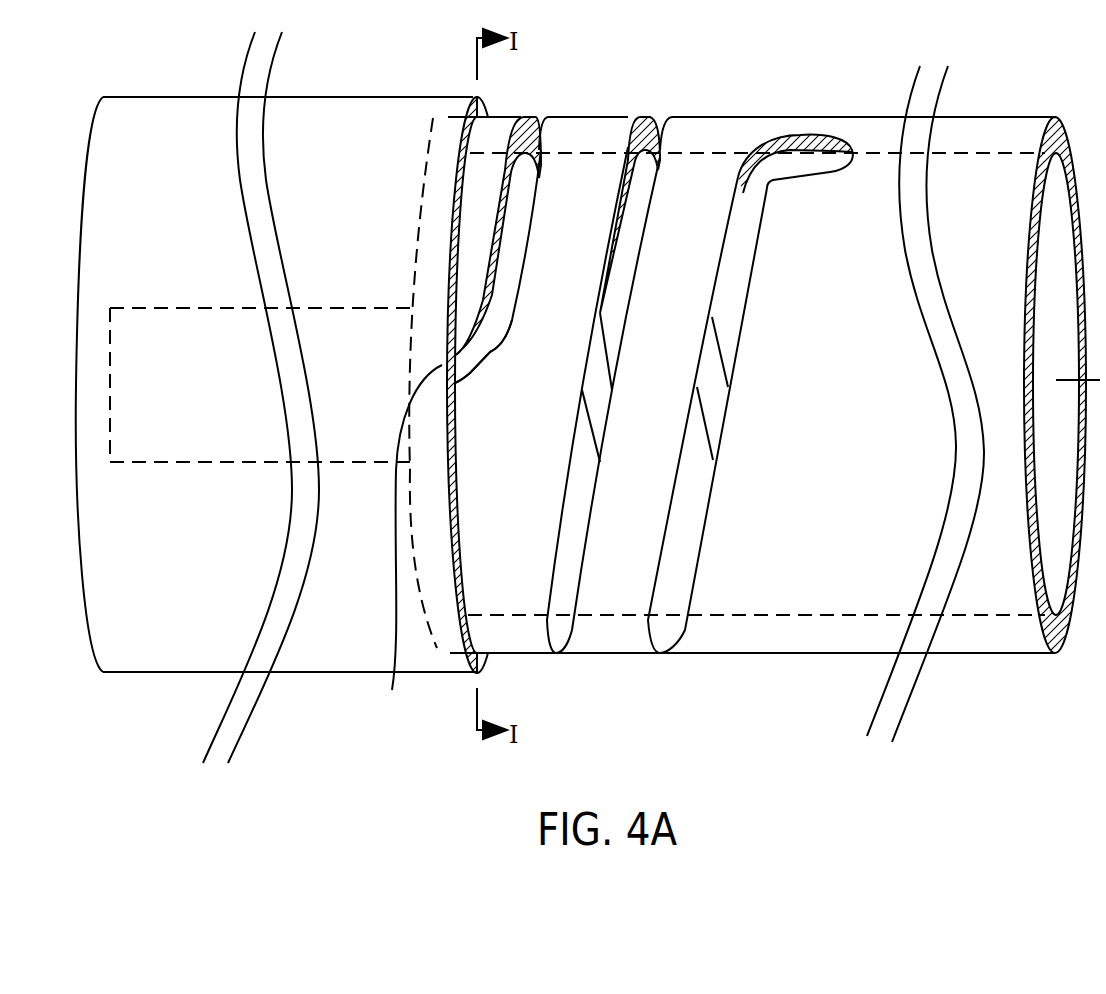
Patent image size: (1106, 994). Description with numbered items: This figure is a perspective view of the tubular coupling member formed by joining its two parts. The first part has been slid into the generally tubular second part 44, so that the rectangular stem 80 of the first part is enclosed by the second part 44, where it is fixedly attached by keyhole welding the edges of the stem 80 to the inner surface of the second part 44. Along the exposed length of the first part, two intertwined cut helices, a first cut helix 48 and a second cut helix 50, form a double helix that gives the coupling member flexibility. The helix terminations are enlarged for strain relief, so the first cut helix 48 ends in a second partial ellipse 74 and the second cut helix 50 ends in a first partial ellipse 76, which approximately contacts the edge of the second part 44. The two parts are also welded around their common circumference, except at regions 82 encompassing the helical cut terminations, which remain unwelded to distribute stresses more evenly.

The second part 44 is at (317, 672).
The first cut helix 48 is at (560, 513).
The second cut helix 50 is at (530, 233).
The second partial ellipse 74 is at (820, 172).
The first partial ellipse 76 is at (455, 381).
The stem 80 is at (198, 462).
The regions 82 is at (393, 690).